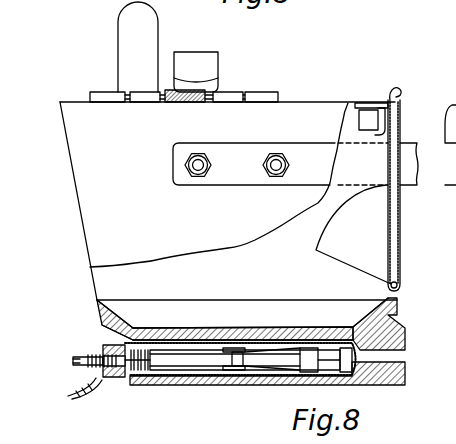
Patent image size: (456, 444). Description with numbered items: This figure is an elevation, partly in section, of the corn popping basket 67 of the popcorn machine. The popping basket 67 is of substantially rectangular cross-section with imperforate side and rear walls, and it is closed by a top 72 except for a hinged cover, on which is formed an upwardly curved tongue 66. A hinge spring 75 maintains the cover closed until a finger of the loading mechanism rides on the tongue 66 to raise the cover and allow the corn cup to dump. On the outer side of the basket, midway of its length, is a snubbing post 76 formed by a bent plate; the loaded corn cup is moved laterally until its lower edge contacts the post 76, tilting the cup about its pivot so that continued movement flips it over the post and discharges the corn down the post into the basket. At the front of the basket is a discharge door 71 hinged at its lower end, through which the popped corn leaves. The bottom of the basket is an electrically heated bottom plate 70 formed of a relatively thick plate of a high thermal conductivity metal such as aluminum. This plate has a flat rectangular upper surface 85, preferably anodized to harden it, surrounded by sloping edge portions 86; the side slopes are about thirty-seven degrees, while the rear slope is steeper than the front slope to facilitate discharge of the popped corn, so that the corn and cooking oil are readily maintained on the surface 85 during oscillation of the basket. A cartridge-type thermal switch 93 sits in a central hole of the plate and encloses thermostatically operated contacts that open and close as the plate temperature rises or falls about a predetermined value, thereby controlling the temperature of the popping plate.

The tongue 66 is at (123, 30).
The popping basket 67 is at (67, 152).
The bottom plate 70 is at (160, 382).
The front discharge door 71 is at (401, 223).
The top 72 is at (300, 100).
The hinge spring 75 is at (215, 84).
The snubbing post 76 is at (192, 62).
The flat rectangular upper surface 85 is at (182, 324).
The sloping edge portions 86 is at (115, 313).
The thermal switch 93 is at (245, 352).